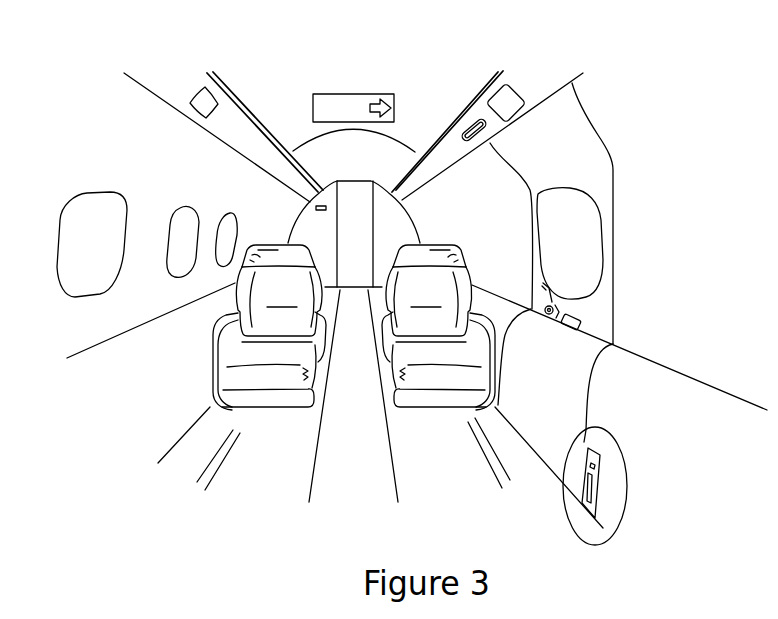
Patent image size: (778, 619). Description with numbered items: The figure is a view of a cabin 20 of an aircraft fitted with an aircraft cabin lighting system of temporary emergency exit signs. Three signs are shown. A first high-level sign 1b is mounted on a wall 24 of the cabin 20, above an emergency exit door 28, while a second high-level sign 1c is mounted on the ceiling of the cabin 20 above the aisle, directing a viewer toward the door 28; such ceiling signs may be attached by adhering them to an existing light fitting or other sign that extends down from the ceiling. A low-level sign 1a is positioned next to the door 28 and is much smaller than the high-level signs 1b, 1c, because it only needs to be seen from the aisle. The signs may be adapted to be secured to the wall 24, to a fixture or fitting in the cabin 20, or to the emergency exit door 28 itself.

The low-level sign 1a is at (601, 468).
The first high-level sign 1b is at (524, 90).
The second high-level sign 1c is at (360, 93).
The cabin 20 is at (626, 76).
The wall 24 is at (176, 174).
The door 28 is at (565, 164).